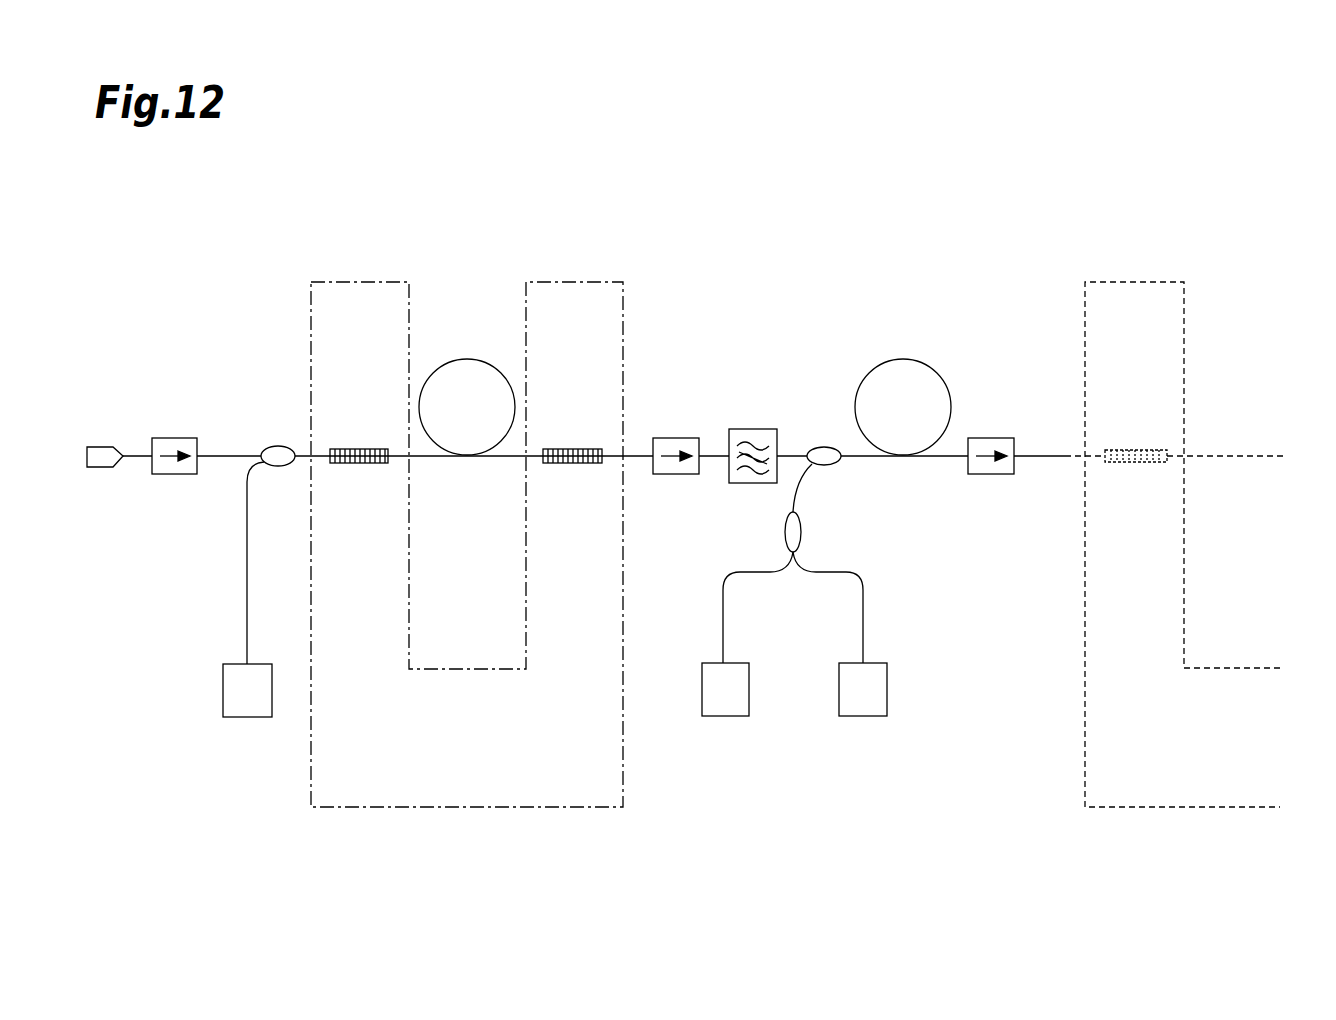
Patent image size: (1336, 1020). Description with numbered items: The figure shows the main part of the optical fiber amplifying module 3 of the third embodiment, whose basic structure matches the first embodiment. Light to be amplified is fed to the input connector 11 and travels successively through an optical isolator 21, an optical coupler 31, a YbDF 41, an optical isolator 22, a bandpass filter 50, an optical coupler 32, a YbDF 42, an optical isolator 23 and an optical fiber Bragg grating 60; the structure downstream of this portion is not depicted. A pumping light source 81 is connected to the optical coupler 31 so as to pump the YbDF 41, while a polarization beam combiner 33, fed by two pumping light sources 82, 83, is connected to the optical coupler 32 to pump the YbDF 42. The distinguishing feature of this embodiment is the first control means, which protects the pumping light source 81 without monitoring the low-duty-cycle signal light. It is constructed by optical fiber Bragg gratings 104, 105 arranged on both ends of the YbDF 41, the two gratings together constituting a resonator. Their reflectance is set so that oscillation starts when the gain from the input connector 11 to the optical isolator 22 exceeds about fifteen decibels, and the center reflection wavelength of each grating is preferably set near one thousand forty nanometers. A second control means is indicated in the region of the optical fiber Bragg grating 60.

The optical fiber amplifying module 3 is at (1184, 187).
The input connector 11 is at (100, 447).
The optical isolator 21 is at (172, 438).
The optical isolator 22 is at (675, 438).
The optical isolator 23 is at (990, 438).
The optical coupler 31 is at (275, 446).
The optical coupler 32 is at (825, 447).
The polarization beam combiner 33 is at (801, 530).
The YbDF 41 is at (467, 359).
The YbDF 42 is at (903, 359).
The bandpass filter 50 is at (752, 429).
The optical fiber Bragg grating 60 is at (1133, 450).
The pumping light source 81 is at (223, 688).
The pumping light source 82 is at (702, 688).
The pumping light source 83 is at (887, 690).
The optical fiber Bragg grating 104 is at (363, 449).
The optical fiber Bragg grating 105 is at (570, 449).